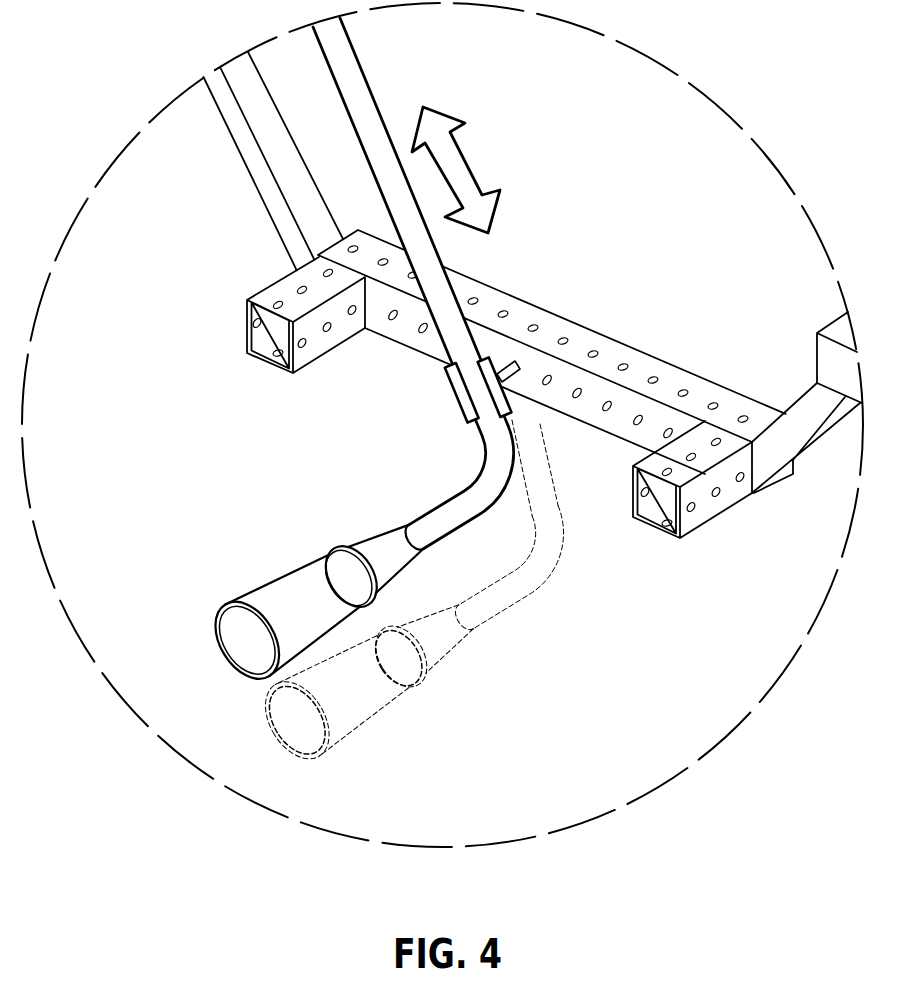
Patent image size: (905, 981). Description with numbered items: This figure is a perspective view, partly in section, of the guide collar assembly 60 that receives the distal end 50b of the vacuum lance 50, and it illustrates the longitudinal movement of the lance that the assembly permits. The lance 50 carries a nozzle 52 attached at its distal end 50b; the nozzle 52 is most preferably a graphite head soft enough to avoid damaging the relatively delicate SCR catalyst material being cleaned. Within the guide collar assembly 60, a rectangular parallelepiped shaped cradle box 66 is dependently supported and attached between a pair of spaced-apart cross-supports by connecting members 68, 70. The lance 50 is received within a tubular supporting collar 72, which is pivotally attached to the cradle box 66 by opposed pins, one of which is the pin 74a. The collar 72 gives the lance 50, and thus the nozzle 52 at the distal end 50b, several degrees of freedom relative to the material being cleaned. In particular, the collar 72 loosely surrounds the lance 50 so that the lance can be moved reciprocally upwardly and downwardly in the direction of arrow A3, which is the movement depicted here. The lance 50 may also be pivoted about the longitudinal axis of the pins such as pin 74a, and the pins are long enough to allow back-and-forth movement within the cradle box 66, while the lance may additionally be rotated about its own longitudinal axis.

The vacuum lance 50 is at (347, 63).
The distal end of the lance 50b is at (447, 510).
The nozzle 52 is at (312, 617).
The guide collar assembly 60 is at (554, 384).
The cradle box 66 is at (718, 393).
The connecting member 68 is at (798, 422).
The connecting member 70 is at (245, 150).
The tubular supporting collar 72 is at (448, 376).
The pin 74a is at (510, 362).
The arrow A3 is at (458, 160).